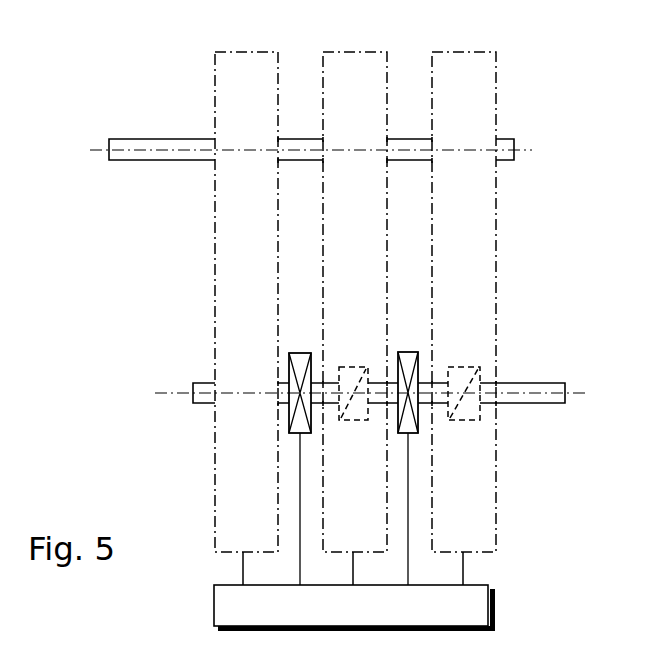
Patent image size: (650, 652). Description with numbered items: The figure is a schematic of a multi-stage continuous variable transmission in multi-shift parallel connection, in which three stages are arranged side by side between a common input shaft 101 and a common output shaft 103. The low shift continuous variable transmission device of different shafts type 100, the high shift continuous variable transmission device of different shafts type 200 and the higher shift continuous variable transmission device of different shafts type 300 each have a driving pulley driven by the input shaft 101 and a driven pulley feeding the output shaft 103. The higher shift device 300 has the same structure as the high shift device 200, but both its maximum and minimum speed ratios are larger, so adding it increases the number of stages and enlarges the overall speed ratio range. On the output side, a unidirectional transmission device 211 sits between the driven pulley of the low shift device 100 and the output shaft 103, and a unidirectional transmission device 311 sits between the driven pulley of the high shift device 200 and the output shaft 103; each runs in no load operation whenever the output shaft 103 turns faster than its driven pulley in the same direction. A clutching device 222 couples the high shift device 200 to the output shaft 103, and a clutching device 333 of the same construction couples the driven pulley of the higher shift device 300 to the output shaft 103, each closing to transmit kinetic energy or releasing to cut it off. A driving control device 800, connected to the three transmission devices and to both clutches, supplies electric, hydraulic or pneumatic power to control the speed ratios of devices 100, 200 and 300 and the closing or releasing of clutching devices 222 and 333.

The low shift continuous variable transmission device of different shafts type 100 is at (496, 90).
The high shift continuous variable transmission device of different shafts type 200 is at (340, 52).
The higher shift continuous variable transmission device of different shafts type 300 is at (215, 95).
The input shaft 101 is at (157, 138).
The output shaft 103 is at (530, 383).
The unidirectional transmission device 311 is at (360, 363).
The unidirectional transmission device 211 is at (462, 420).
The clutching device 333 is at (300, 360).
The clutching device 222 is at (410, 360).
The driving control device 800 is at (493, 607).